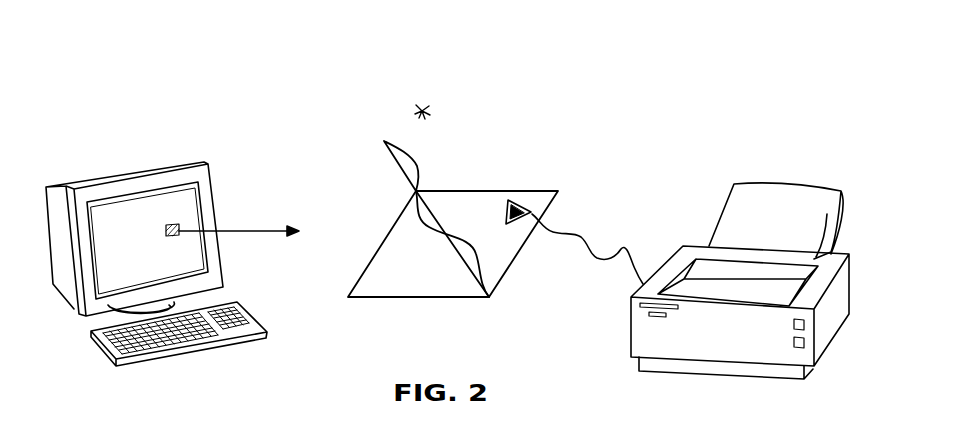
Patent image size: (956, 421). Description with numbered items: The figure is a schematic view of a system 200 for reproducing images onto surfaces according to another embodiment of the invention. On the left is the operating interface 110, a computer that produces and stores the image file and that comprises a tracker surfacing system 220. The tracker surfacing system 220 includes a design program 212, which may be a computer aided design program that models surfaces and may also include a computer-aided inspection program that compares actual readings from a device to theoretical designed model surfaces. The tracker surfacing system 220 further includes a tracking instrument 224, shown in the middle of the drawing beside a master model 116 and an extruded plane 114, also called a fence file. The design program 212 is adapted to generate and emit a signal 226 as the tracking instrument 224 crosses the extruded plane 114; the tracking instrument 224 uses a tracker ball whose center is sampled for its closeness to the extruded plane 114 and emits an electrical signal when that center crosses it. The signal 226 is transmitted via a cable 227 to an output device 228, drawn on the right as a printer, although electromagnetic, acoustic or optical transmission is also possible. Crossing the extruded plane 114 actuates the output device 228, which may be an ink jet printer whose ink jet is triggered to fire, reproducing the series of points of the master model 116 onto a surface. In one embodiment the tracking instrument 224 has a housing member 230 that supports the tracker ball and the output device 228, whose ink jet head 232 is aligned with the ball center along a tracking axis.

The system 200 is at (663, 68).
The operating interface 110 is at (130, 192).
The tracker surfacing system 220 is at (178, 232).
The design program 212 is at (205, 226).
The master model 116 is at (400, 278).
The extruded plane 114 is at (405, 158).
The signal 226 is at (425, 103).
The housing member 230 is at (513, 202).
The ink jet head 232 is at (530, 213).
The tracking instrument 224 is at (518, 222).
The cable 227 is at (623, 250).
The output device 228 is at (776, 175).